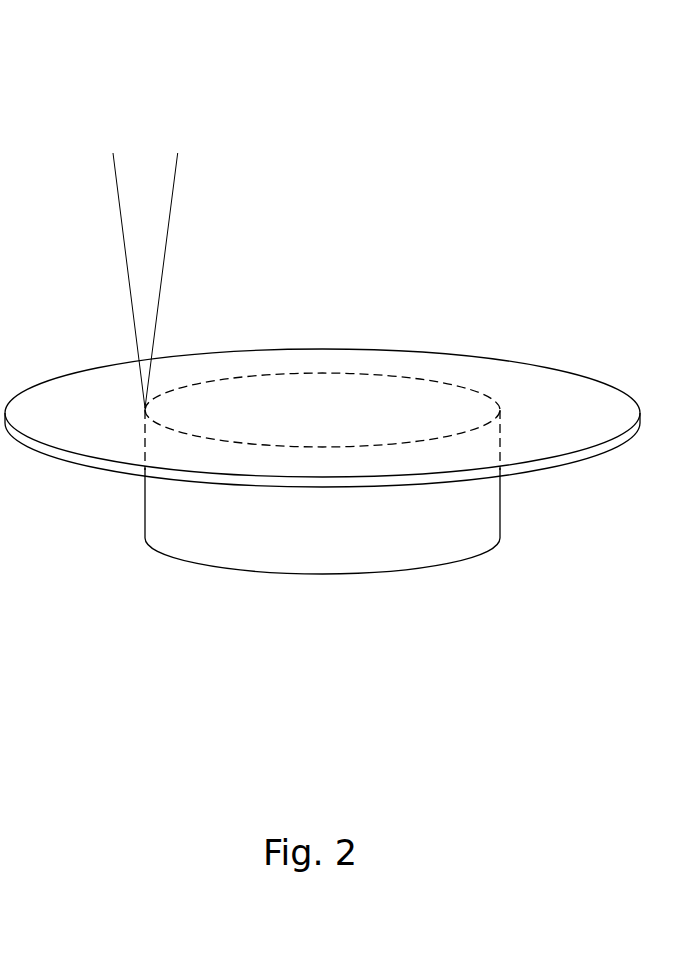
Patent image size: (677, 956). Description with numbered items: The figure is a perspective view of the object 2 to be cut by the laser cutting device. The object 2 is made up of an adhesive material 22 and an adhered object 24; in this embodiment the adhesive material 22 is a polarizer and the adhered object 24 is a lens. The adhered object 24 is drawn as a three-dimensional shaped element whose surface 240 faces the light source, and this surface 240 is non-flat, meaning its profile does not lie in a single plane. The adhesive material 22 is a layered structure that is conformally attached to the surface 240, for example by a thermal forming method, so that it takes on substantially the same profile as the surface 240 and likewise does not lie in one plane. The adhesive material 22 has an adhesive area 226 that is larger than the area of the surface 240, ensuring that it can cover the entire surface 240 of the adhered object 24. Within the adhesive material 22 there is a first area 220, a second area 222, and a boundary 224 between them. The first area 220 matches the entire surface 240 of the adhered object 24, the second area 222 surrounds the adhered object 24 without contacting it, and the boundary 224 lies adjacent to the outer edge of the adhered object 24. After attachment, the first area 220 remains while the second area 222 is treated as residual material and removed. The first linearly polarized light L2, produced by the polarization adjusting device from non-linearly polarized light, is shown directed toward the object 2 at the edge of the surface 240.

The object to be cut 2 is at (51, 97).
The adhesive material 22 is at (562, 265).
The first area 220 is at (413, 395).
The boundary 224 is at (487, 400).
The second area 222 is at (527, 393).
The adhesive area 226 is at (313, 362).
The surface 240 is at (203, 385).
The adhered object 24 is at (227, 545).
The first linearly polarized light L2 is at (162, 220).